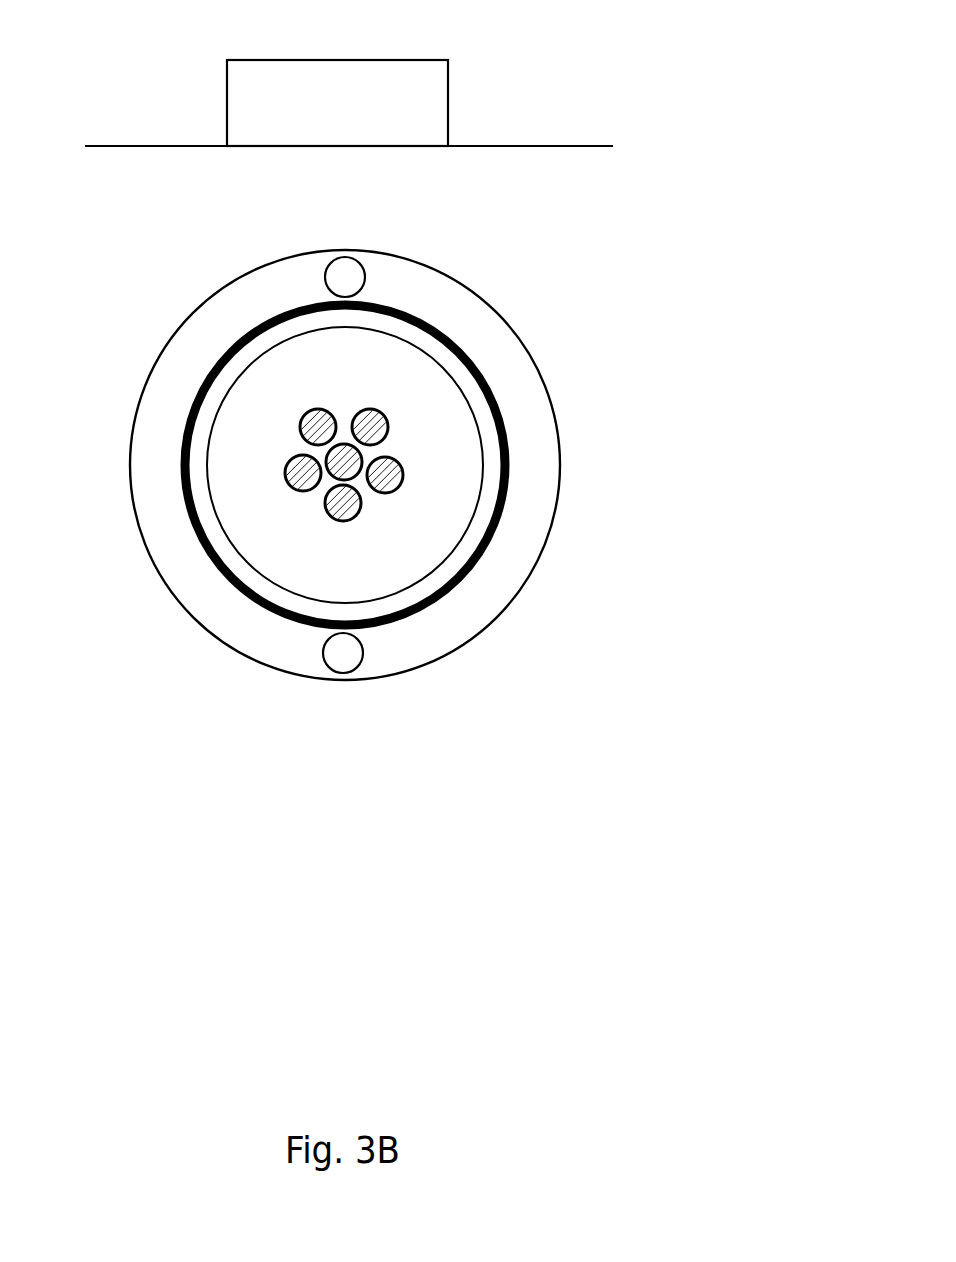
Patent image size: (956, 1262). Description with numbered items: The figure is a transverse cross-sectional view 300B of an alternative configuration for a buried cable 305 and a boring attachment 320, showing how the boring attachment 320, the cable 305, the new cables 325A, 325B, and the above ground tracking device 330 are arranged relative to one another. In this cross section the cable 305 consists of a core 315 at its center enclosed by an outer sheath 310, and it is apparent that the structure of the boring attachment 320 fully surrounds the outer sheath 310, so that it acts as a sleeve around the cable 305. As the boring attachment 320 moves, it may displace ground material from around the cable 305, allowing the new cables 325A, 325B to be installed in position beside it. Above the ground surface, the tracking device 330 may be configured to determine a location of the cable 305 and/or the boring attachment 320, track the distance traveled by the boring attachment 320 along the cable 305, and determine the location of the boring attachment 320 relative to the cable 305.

The above ground tracking device 330 is at (243, 60).
The buried cable 305 is at (143, 297).
The boring attachment 320 is at (487, 307).
The outer sheath 310 is at (482, 375).
The core 315 is at (398, 442).
The new cable 325A is at (365, 275).
The new cable 325B is at (363, 653).
The transverse cross-sectional view 300B is at (677, 900).